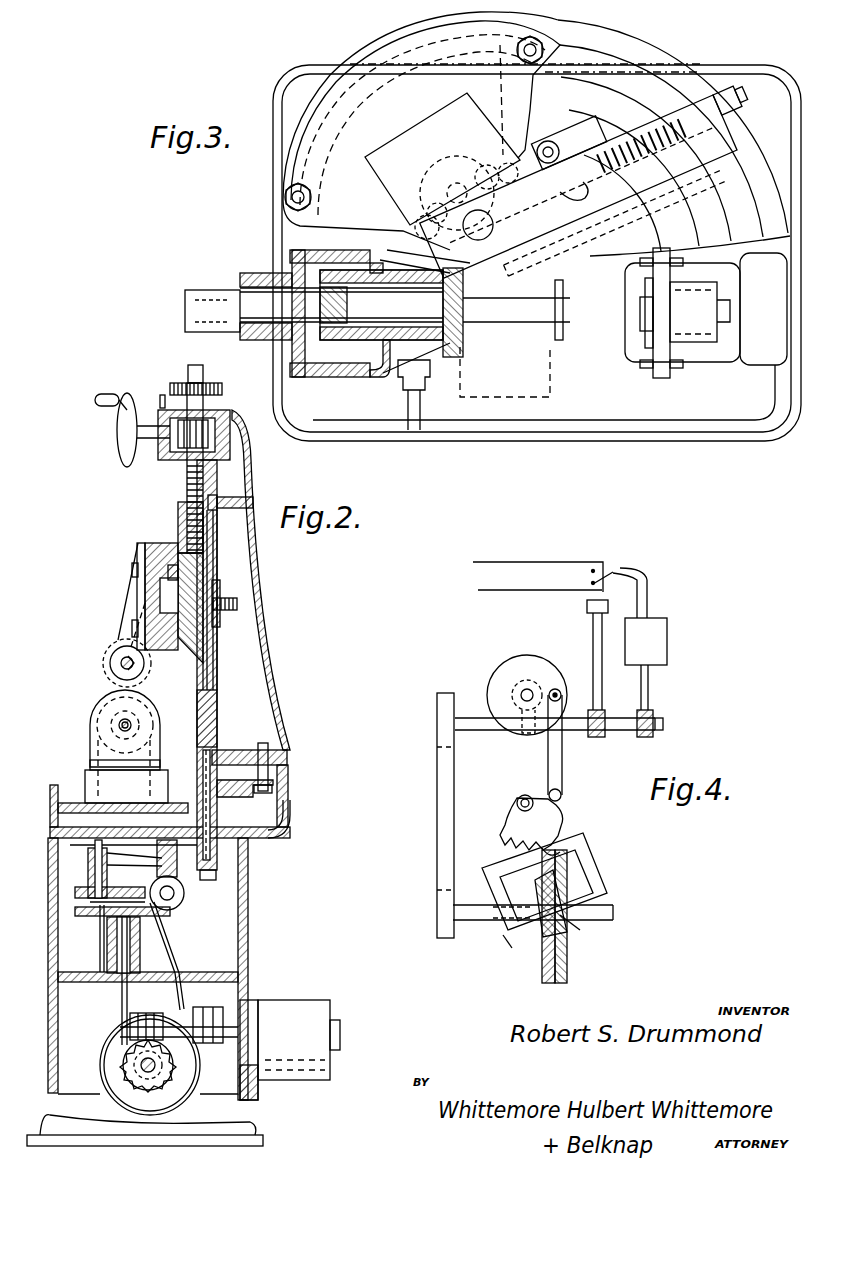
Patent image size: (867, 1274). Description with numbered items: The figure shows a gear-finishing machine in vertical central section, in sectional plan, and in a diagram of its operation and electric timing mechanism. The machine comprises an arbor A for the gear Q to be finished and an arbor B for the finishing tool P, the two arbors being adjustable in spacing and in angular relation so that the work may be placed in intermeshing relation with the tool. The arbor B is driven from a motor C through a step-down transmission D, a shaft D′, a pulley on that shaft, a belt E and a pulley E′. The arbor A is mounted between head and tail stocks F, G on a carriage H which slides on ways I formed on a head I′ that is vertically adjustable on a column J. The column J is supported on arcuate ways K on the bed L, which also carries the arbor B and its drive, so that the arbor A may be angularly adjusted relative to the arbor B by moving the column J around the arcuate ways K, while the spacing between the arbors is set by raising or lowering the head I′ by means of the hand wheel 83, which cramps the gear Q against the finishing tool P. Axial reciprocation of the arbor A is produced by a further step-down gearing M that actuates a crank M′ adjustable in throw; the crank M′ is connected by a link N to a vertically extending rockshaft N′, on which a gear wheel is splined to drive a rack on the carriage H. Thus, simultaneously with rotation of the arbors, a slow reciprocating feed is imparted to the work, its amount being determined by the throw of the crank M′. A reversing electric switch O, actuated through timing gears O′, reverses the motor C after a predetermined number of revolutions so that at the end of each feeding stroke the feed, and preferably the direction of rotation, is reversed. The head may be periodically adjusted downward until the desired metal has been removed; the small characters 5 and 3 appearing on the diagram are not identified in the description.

In FIG. 3, the column J is at (445, 117).
In FIG. 2, the column J is at (263, 538).
In FIG. 3, the carriage H is at (640, 133).
In FIG. 2, the carriage H is at (155, 545).
In FIG. 3, the arcuate ways K is at (748, 226).
In FIG. 2, the arcuate ways K is at (287, 758).
In FIG. 3, the bed L is at (742, 272).
In FIG. 2, the bed L is at (289, 786).
In FIG. 3, the arbor for the finishing tool B is at (556, 300).
In FIG. 2, the arbor for the finishing tool B is at (131, 727).
In FIG. 4, the arbor for the finishing tool B is at (602, 920).
In FIG. 3, the pulley E′ is at (330, 262).
In FIG. 4, the pulley E′ is at (445, 908).
In FIG. 2, the hand wheel 83 is at (120, 432).
In FIG. 2, the ways I is at (172, 530).
In FIG. 2, the head I′ is at (205, 567).
In FIG. 2, the head stock F is at (140, 608).
In FIG. 4, the head stock F is at (517, 935).
In FIG. 2, the gear Q is at (104, 664).
In FIG. 4, the gear Q is at (567, 930).
In FIG. 2, the arbor for the gear to be finished A is at (134, 668).
In FIG. 4, the arbor for the gear to be finished A is at (575, 897).
In FIG. 2, the finishing tool P is at (92, 716).
In FIG. 2, the belt E is at (100, 947).
In FIG. 4, the belt E is at (437, 775).
In FIG. 2, the step-down transmission D is at (152, 1020).
In FIG. 4, the step-down transmission D is at (650, 738).
In FIG. 2, the shaft D′ is at (175, 1078).
In FIG. 4, the shaft D′ is at (580, 732).
In FIG. 2, the motor C is at (300, 996).
In FIG. 4, the step-down gearing M is at (527, 734).
In FIG. 4, the crank M′ is at (558, 688).
In FIG. 4, the reversing electric switch O is at (668, 642).
In FIG. 4, the timing gears O′ is at (629, 710).
In FIG. 4, the link N is at (563, 772).
In FIG. 4, the rockshaft N′ is at (516, 803).
In FIG. 4, the tail stock G is at (603, 905).
In FIG. 4, the part 5 is at (530, 905).
In FIG. 4, the part 3 is at (528, 930).